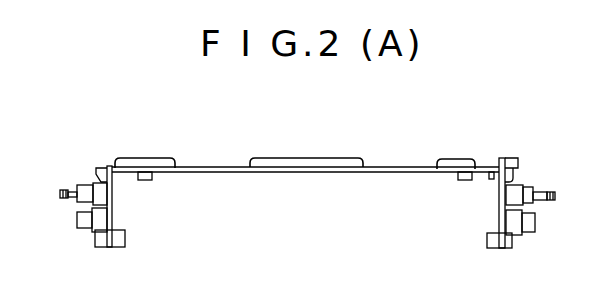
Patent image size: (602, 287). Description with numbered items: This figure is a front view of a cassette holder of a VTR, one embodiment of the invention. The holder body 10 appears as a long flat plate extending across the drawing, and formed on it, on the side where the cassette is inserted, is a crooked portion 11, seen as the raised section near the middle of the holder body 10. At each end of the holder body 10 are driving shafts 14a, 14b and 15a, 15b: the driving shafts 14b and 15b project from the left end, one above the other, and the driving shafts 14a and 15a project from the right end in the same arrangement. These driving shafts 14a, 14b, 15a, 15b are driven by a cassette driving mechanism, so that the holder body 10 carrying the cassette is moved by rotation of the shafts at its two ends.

The holder body 10 is at (228, 167).
The crooked portion 11 is at (337, 162).
The driving shaft 14a is at (545, 190).
The driving shaft 14b is at (78, 184).
The driving shaft 15a is at (528, 235).
The driving shaft 15b is at (85, 230).